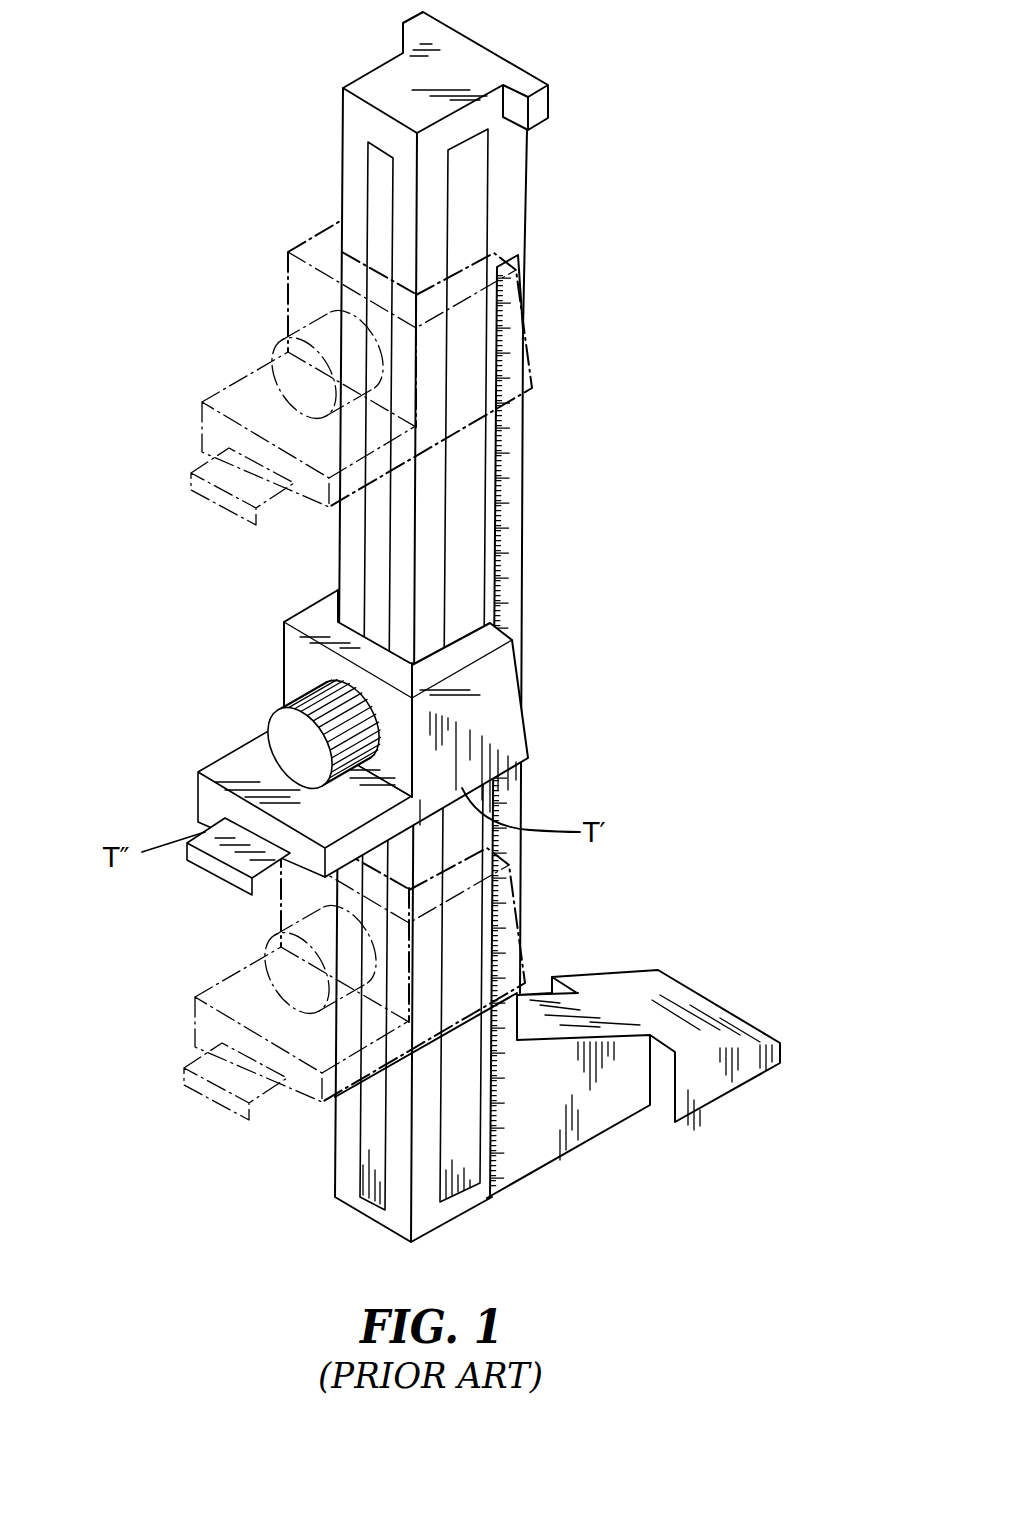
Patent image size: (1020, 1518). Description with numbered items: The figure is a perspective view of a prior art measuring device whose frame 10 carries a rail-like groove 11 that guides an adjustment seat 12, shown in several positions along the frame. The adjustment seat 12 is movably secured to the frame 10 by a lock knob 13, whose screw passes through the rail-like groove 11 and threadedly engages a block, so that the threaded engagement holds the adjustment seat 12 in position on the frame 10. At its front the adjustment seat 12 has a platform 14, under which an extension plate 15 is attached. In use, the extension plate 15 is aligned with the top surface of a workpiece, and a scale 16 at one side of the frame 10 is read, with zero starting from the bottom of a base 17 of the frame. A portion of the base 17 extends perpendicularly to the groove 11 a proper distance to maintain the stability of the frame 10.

The frame 10 is at (513, 205).
The rail-like groove 11 is at (368, 548).
The adjustment seat 12 is at (290, 648).
The lock knob 13 is at (290, 720).
The platform 14 is at (222, 768).
The extension plate 15 is at (218, 853).
The scale 16 is at (525, 527).
The base 17 is at (566, 1147).